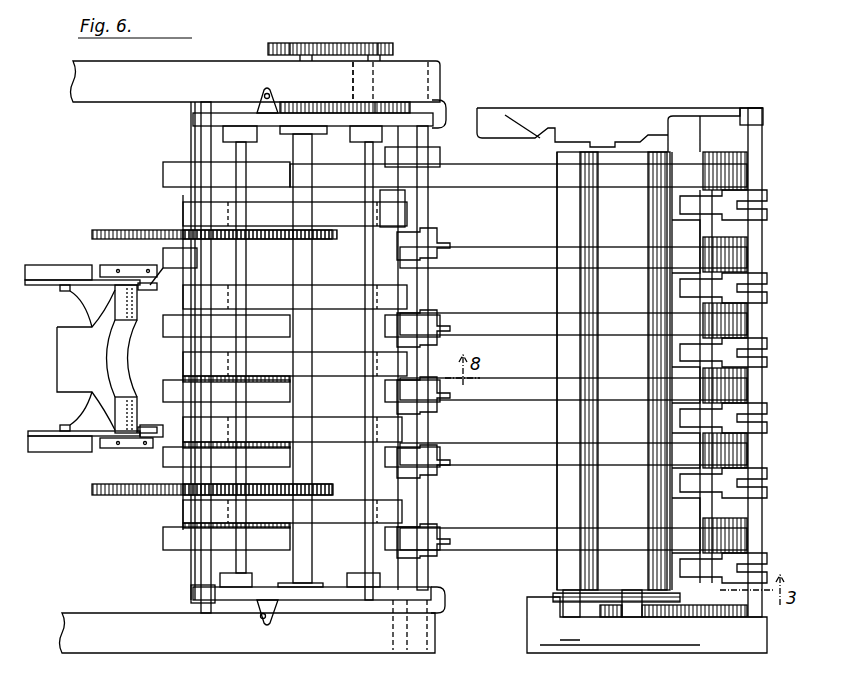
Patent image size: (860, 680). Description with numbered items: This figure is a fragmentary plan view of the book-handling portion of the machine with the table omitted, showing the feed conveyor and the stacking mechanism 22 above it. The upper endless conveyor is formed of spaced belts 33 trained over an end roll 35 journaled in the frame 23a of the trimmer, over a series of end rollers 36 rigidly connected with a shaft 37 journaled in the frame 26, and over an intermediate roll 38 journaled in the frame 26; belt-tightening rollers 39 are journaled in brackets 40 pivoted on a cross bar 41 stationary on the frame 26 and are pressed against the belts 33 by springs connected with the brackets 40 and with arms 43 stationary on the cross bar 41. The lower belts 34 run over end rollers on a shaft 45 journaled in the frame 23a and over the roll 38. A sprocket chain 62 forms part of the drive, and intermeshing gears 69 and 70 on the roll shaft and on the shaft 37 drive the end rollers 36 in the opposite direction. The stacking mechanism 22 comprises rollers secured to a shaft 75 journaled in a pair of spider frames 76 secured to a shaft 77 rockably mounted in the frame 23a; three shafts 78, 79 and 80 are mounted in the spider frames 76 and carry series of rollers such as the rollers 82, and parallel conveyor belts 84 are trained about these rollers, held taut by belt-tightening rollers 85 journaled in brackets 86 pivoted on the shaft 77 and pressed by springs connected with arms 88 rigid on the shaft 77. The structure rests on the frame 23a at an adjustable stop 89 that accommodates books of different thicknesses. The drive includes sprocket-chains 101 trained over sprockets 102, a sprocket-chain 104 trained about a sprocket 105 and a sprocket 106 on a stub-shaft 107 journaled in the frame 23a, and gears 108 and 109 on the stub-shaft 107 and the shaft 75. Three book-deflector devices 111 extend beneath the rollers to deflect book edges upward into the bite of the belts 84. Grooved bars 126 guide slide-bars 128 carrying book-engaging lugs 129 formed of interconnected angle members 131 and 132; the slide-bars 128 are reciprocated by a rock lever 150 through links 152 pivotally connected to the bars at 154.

The stacking mechanism 22 is at (175, 159).
The frame 23a is at (77, 620).
The frame 26 is at (557, 207).
The belts 33 is at (493, 172).
The belts 34 is at (170, 173).
The end roll 35 is at (427, 155).
The end rollers 36 is at (735, 150).
The shaft 37 is at (690, 148).
The intermediate roll 38 is at (613, 371).
The belt-tightening rollers 39 is at (675, 300).
The brackets 40 is at (765, 270).
The cross bar 41 is at (762, 165).
The arms 43 is at (745, 478).
The shaft 45 is at (191, 573).
The sprocket chain 62 is at (555, 597).
The gear 69 is at (615, 617).
The gear 70 is at (700, 617).
The shaft 75 is at (312, 155).
The spider frames 76 is at (240, 118).
The shaft 77 is at (430, 205).
The shaft 78 is at (246, 155).
The shaft 79 is at (199, 140).
The shaft 80 is at (365, 173).
The rollers 82 is at (183, 200).
The conveyor belts 84 is at (295, 362).
The belt-tightening rollers 85 is at (415, 297).
The brackets 86 is at (437, 240).
The arms 88 is at (452, 245).
The stop 89 is at (272, 92).
The sprocket-chains 101 is at (150, 230).
The sprockets 102 is at (330, 226).
The sprocket-chain 104 is at (330, 43).
The sprocket 105 is at (292, 43).
The sprocket 106 is at (382, 43).
The stub-shaft 107 is at (395, 70).
The gear 108 is at (375, 102).
The gear 109 is at (315, 102).
The book-deflector devices 111 is at (255, 242).
The bars 126 is at (45, 268).
The slide-bars 128 is at (169, 342).
The book-engaging lugs 129 is at (103, 265).
The angle members 131 is at (135, 265).
The angle members 132 is at (148, 290).
The rock lever 150 is at (118, 356).
The links 152 is at (85, 322).
The pivotal connection 154 is at (65, 291).